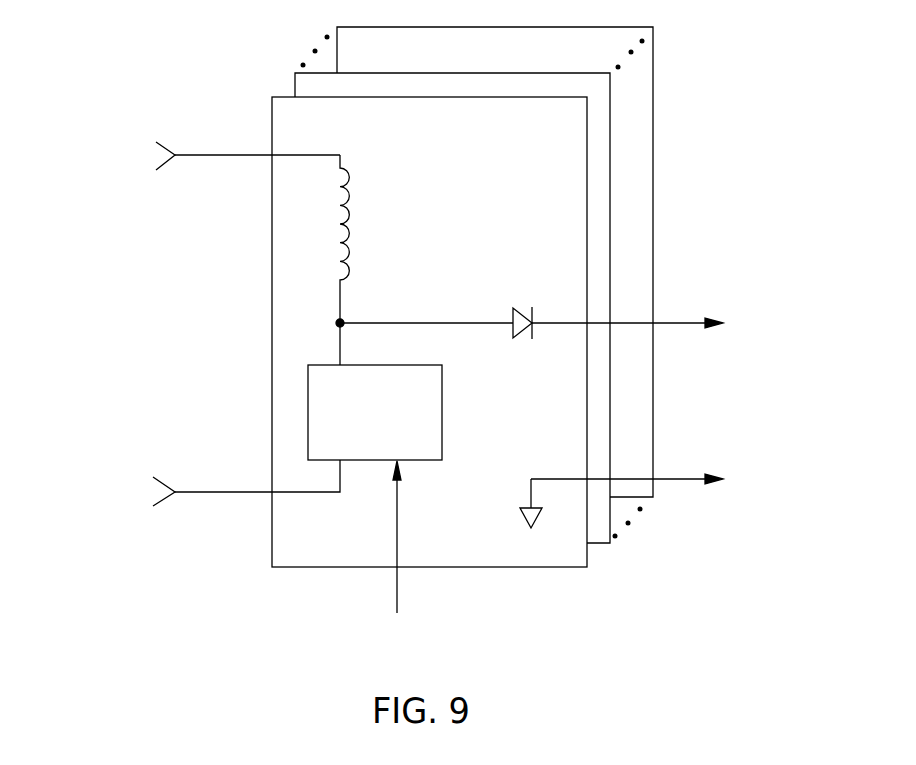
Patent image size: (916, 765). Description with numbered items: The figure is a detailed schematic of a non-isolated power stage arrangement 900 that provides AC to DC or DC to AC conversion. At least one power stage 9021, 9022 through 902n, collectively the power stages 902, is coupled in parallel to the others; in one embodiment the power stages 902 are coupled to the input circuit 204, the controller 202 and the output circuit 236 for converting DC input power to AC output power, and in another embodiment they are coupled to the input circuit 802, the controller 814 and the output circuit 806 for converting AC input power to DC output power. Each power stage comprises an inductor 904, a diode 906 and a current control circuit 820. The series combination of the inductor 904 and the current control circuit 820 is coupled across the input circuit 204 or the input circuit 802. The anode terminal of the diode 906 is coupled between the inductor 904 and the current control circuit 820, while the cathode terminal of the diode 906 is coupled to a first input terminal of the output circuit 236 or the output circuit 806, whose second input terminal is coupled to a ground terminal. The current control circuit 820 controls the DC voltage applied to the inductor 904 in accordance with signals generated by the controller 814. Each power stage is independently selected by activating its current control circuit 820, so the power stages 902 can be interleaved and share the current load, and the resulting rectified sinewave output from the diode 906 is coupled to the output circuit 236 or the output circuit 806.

The power supply circuit 900 is at (885, 72).
The power stages 902 is at (327, 20).
The first power stage 9021 is at (533, 143).
The second power stage 9022 is at (611, 90).
The nth power stage 902n is at (655, 45).
The inductor 904 is at (349, 194).
The diode 906 is at (528, 306).
The current control circuit 820 is at (442, 412).
The input circuit 802 is at (85, 352).
The input circuit 204 is at (197, 352).
The output circuit 806 is at (690, 446).
The output circuit 236 is at (802, 446).
The controller 202 is at (378, 560).
The controller 814 is at (529, 647).